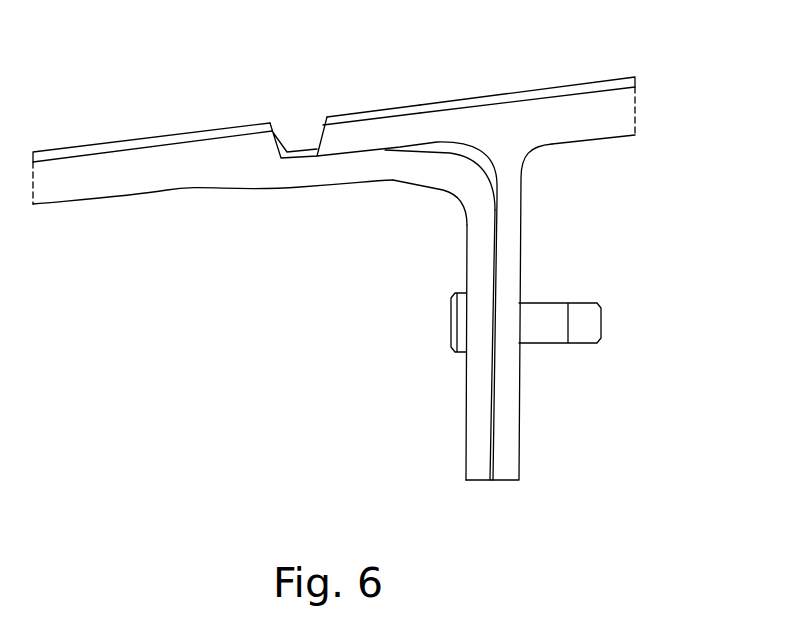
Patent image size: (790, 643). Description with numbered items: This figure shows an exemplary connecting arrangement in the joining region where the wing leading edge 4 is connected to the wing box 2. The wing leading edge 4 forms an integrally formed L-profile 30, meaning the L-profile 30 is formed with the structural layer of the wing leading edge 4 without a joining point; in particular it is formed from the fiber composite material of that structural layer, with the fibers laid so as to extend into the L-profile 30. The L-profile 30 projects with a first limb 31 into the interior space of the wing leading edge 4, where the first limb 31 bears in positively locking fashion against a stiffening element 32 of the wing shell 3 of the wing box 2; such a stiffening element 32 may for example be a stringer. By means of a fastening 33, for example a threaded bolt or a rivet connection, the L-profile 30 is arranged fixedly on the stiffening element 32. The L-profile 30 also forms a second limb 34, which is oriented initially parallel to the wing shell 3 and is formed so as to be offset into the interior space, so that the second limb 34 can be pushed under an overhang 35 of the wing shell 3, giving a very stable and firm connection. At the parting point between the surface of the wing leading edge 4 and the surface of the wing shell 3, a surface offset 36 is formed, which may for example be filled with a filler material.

The wing box 2 is at (522, 213).
The wing shell 3 is at (590, 80).
The wing leading edge 4 is at (107, 141).
The L-profile 30 is at (443, 190).
The first limb 31 is at (478, 433).
The stiffening element 32 is at (505, 375).
The fastening 33 is at (603, 320).
The second limb 34 is at (345, 170).
The overhang 35 is at (367, 111).
The surface offset 36 is at (303, 137).